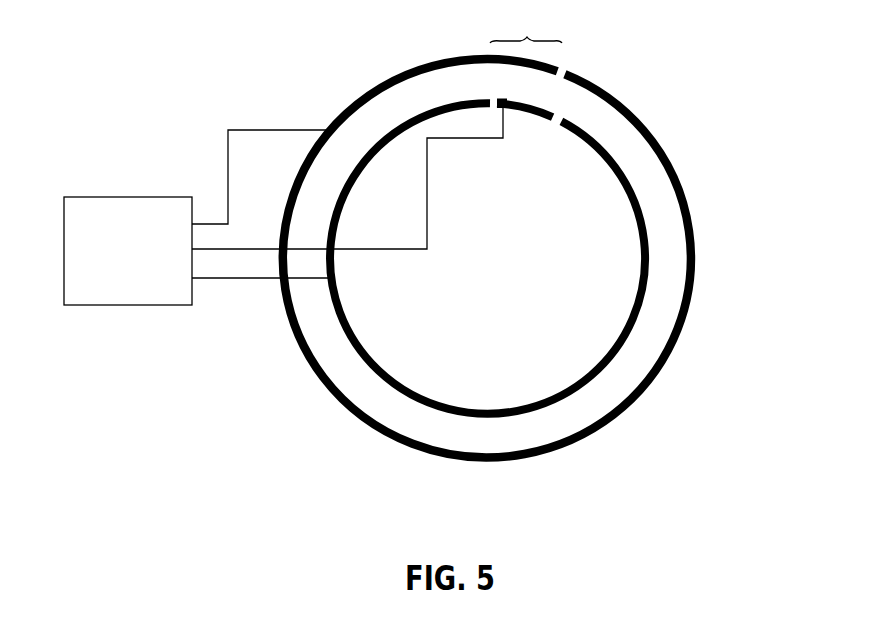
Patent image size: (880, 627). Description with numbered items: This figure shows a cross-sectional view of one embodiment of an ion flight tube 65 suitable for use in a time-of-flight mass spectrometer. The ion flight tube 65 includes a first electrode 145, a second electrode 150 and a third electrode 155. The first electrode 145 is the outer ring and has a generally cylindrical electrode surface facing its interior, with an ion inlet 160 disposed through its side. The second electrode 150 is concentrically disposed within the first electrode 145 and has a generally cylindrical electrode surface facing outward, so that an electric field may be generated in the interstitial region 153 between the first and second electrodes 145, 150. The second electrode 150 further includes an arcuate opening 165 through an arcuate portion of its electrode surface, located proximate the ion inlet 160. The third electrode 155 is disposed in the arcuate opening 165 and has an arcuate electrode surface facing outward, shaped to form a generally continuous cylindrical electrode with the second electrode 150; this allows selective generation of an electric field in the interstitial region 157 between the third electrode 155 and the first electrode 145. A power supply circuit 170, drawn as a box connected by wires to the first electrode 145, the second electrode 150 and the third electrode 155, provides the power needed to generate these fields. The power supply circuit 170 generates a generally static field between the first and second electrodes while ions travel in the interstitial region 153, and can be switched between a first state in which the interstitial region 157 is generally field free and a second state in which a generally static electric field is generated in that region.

The ion flight tube 65 is at (308, 54).
The first electrode 145 is at (650, 128).
The second electrode 150 is at (641, 204).
The interstitial region 153 is at (583, 405).
The third electrode 155 is at (518, 105).
The interstitial region 157 is at (519, 87).
The ion inlet 160 is at (573, 72).
The arcuate opening 165 is at (526, 24).
The power supply circuit 170 is at (140, 197).